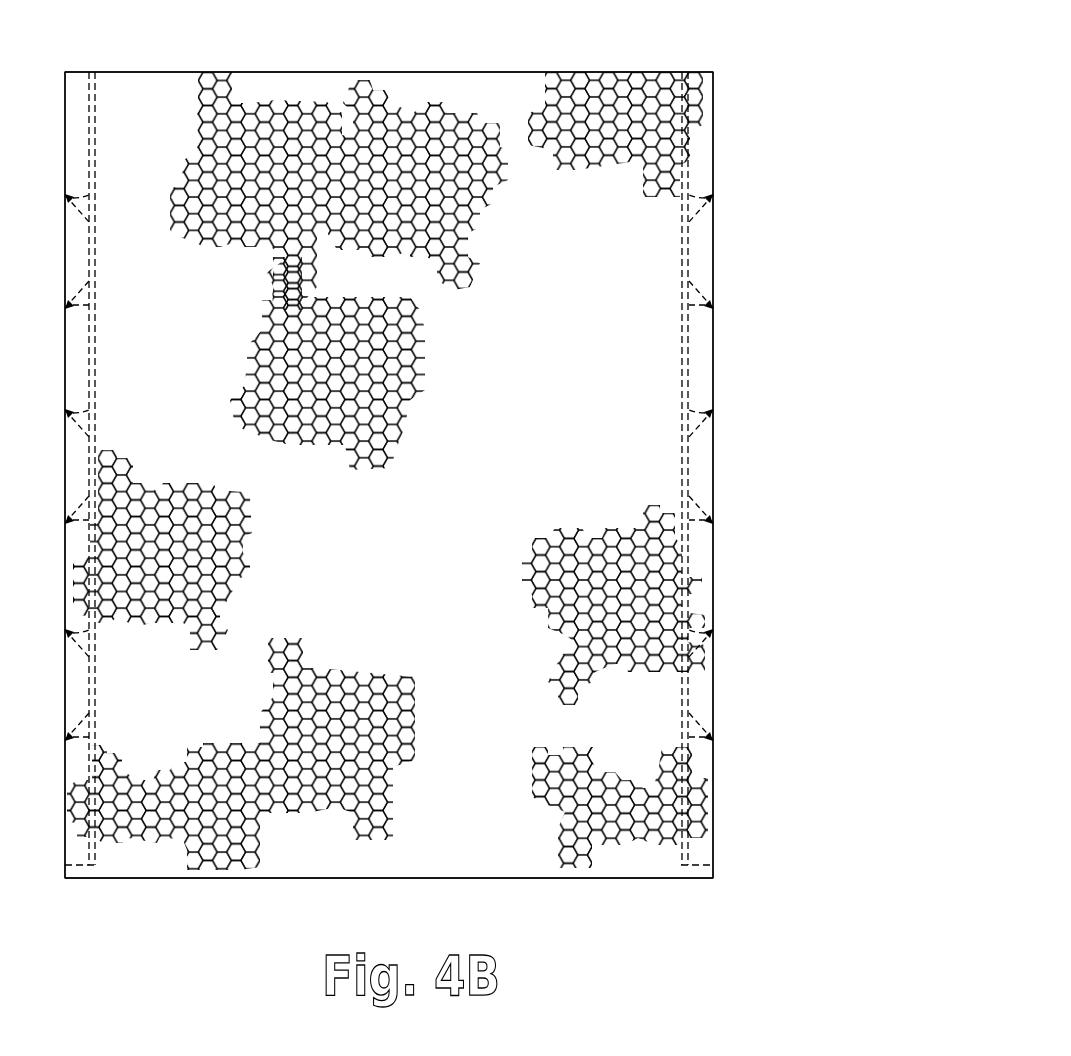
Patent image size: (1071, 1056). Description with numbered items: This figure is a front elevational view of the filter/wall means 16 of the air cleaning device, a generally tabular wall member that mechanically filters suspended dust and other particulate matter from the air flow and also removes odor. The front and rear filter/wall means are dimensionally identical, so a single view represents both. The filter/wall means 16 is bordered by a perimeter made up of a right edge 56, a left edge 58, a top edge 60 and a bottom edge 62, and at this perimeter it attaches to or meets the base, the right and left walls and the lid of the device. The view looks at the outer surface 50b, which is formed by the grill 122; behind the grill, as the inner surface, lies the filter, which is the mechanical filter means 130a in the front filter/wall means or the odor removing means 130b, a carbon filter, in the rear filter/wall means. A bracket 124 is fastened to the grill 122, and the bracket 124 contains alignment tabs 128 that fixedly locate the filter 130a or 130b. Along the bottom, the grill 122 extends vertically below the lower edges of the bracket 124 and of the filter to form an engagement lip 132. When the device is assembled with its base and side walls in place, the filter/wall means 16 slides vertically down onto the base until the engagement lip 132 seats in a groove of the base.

The filter/wall means 16 is at (744, 134).
The outer surface 50b is at (548, 622).
The right edge 56 is at (712, 380).
The left edge 58 is at (62, 392).
The top edge 60 is at (410, 72).
The bottom edge 62 is at (342, 878).
The grill 122 is at (540, 548).
The bracket 124 is at (712, 248).
The alignment tabs 128 is at (705, 525).
The mechanical filter means 130a is at (593, 93).
The odor removing means 130b is at (615, 134).
The engagement lip 132 is at (700, 878).